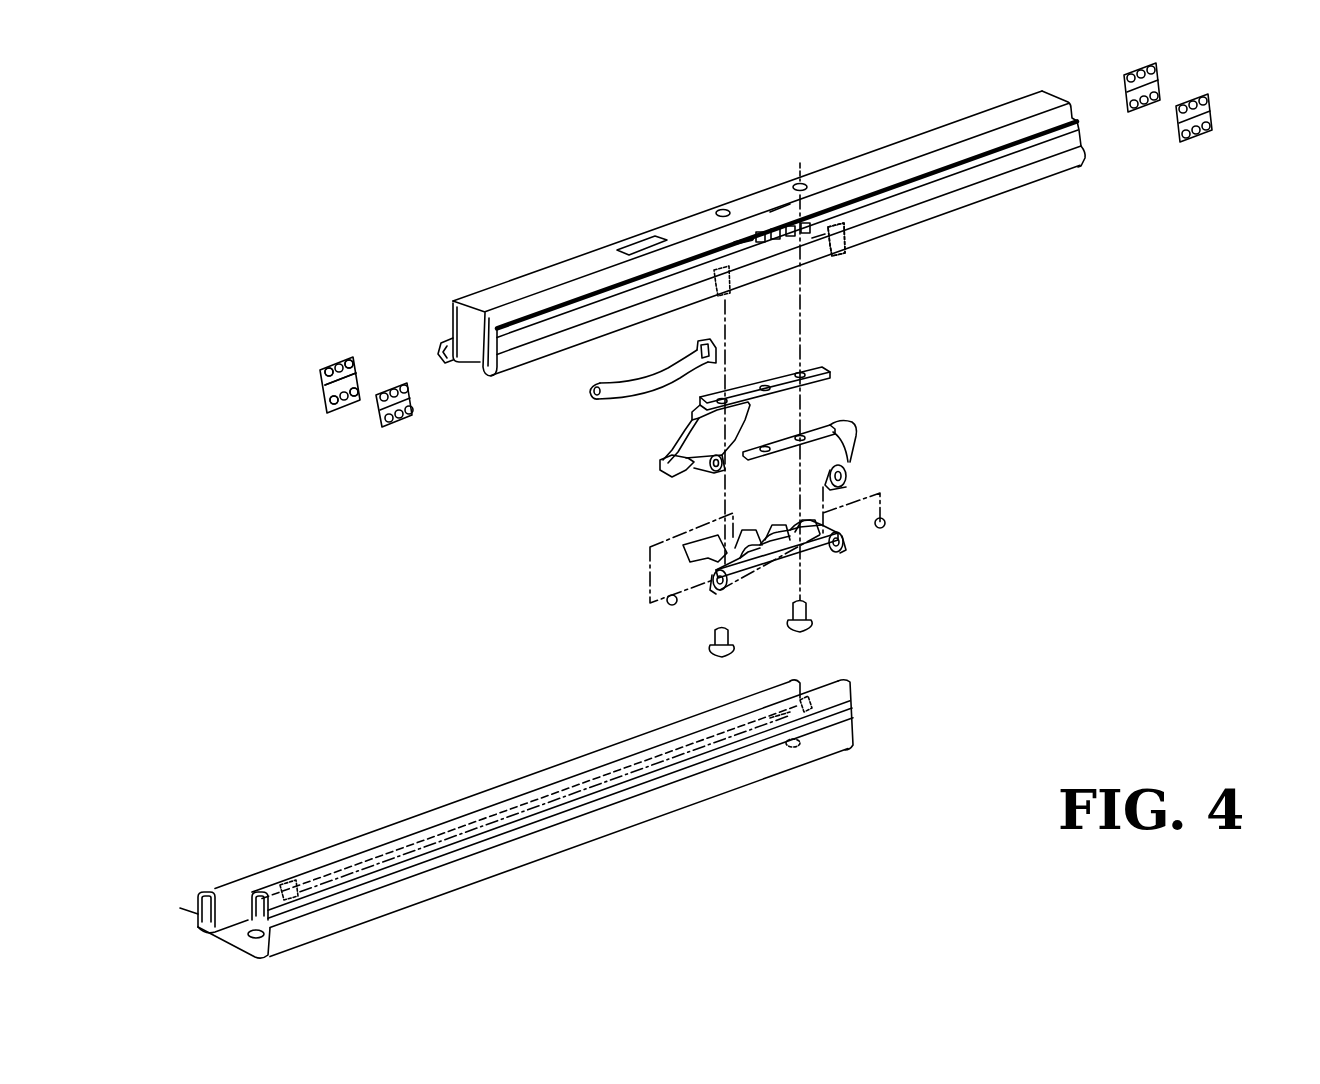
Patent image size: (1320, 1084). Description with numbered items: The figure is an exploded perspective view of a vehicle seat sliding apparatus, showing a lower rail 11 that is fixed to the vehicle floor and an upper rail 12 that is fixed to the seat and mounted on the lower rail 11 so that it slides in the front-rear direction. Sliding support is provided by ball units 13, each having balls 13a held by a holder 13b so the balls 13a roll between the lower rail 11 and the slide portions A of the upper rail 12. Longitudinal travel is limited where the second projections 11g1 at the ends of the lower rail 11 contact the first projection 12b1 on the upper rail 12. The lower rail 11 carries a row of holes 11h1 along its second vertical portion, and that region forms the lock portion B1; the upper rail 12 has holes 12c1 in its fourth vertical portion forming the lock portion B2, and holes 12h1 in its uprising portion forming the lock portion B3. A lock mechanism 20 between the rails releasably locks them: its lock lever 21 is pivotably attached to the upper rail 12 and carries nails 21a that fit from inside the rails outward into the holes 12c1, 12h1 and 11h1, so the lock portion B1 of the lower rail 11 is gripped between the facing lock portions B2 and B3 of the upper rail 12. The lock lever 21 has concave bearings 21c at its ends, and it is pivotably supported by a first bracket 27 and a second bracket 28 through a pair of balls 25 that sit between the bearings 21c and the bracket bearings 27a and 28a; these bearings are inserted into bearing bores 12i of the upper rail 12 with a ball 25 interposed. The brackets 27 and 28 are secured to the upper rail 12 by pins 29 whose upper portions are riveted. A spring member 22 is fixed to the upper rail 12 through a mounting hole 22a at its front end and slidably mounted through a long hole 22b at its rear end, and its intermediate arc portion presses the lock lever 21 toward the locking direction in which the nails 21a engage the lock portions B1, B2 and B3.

The lower rail 11 is at (516, 819).
The second projection 11g1 is at (215, 912).
The hole 11h1 is at (287, 883).
The upper rail 12 is at (588, 250).
The first projection 12b1 is at (723, 208).
The hole 12c1 is at (830, 222).
The hole 12h1 is at (816, 238).
The bearing bore 12i is at (730, 294).
The ball unit 13 is at (305, 378).
The ball 13a is at (328, 368).
The holder 13b is at (322, 385).
The lock mechanism 20 is at (965, 400).
The lock lever 21 is at (798, 600).
The nail 21a is at (820, 550).
The bearing 21c is at (717, 590).
The spring member 22 is at (660, 378).
The mounting hole 22a is at (590, 391).
The long hole 22b is at (701, 344).
The ball 25 is at (668, 604).
The first bracket 27 is at (842, 423).
The bearing 27a is at (848, 480).
The second bracket 28 is at (757, 378).
The bearing 28a is at (708, 470).
The pin 29 is at (718, 655).
The slide portion A is at (944, 204).
The lock portion B1 is at (820, 700).
The lock portion B2 is at (778, 212).
The lock portion B3 is at (792, 242).